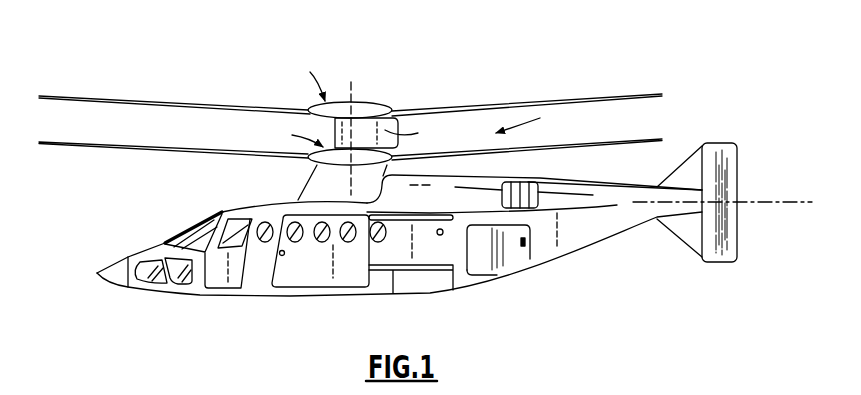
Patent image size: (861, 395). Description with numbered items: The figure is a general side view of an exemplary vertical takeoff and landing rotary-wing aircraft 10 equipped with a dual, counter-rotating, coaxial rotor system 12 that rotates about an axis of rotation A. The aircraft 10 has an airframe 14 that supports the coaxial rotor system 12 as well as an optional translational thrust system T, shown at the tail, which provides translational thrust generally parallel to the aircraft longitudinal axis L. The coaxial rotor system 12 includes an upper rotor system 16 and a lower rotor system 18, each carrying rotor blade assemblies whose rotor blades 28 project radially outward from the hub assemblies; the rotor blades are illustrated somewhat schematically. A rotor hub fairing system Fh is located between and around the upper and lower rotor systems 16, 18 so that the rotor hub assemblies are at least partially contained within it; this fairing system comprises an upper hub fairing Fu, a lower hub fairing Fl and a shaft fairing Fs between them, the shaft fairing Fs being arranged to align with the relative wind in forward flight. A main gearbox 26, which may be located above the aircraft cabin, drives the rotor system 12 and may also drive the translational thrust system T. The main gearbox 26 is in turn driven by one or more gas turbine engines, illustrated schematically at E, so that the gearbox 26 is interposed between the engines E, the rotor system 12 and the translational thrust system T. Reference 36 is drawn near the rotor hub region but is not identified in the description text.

The rotary-wing aircraft 10 is at (449, 71).
The dual counter-rotating coaxial rotor system 12 is at (379, 98).
The airframe 14 is at (247, 202).
The upper rotor system 16 is at (396, 103).
The lower rotor system 18 is at (306, 166).
The main gearbox 26 is at (341, 193).
The rotor blade 28 is at (322, 270).
The upper rotor hub 36 is at (302, 119).
The axis of rotation A is at (353, 90).
The engine E is at (454, 203).
The translational thrust system T is at (726, 132).
The aircraft longitudinal axis L is at (763, 202).
The upper hub fairing Fu is at (304, 77).
The lower hub fairing Fl is at (299, 139).
The shaft fairing Fs is at (412, 137).
The rotor hub fairing system Fh is at (532, 122).